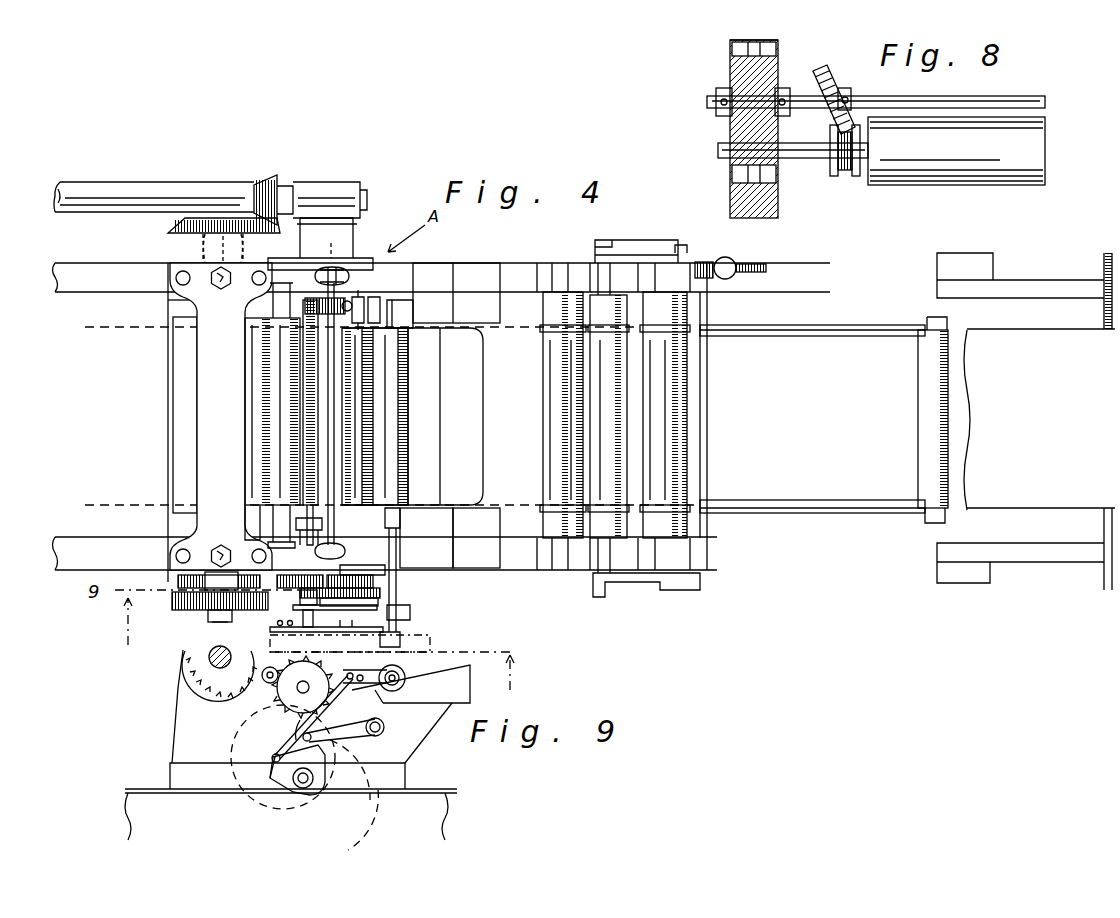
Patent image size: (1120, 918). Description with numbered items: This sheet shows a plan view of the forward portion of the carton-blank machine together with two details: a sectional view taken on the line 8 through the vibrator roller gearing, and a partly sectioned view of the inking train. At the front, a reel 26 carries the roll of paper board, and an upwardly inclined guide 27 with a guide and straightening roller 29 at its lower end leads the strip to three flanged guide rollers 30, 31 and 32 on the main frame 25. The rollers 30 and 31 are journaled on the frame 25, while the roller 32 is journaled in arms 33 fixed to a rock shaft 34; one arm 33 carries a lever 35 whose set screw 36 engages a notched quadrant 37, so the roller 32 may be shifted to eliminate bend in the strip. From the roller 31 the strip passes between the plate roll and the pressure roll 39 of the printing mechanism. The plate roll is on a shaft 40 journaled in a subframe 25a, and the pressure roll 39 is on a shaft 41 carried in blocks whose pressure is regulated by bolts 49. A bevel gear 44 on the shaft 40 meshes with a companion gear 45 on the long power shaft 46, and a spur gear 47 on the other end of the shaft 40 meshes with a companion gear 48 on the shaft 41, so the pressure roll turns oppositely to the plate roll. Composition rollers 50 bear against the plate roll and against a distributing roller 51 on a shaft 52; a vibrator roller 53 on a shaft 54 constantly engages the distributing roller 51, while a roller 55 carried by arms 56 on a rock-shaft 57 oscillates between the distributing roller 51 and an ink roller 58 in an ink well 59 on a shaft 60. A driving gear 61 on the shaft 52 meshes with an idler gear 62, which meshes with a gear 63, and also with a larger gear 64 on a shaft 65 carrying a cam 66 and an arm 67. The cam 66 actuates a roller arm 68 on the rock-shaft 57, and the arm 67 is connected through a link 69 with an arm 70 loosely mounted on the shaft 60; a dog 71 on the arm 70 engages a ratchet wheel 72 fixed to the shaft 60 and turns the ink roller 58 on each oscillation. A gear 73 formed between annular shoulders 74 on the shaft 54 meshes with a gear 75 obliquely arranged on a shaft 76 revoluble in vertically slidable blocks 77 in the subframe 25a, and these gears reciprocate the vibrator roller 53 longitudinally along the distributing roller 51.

In FIG. 4, the section line 8— 8 is at (340, 307).
In FIG. 4, the main frame 25 is at (498, 276).
In FIG. 4, the subframe 25a is at (186, 299).
In FIG. 9, the subframe 25a is at (190, 735).
In FIG. 8, the subframe 25a is at (740, 42).
In FIG. 4, the reel 26 is at (1105, 251).
In FIG. 4, the upwardly inclined guide 27 is at (808, 325).
In FIG. 4, the guide and straightening roller 29 is at (933, 370).
In FIG. 4, the flanged guide roller 30 is at (665, 448).
In FIG. 4, the flanged guide roller 31 is at (550, 442).
In FIG. 4, the flanged guide roller 32 is at (578, 362).
In FIG. 4, the arms 33 is at (638, 254).
In FIG. 4, the rock shaft 34 is at (690, 384).
In FIG. 4, the lever 35 is at (711, 263).
In FIG. 4, the set screw 36 is at (733, 276).
In FIG. 4, the notched quadrant 37 is at (766, 267).
In FIG. 4, the pressure roll 39 is at (185, 375).
In FIG. 4, the shaft 40 is at (220, 626).
In FIG. 4, the shaft 41 is at (210, 620).
In FIG. 4, the bevel gear 44 is at (176, 227).
In FIG. 4, the companion gear 45 is at (270, 178).
In FIG. 4, the power shaft 46 is at (136, 195).
In FIG. 4, the spur gear 47 is at (172, 600).
In FIG. 4, the companion gear 48 is at (180, 589).
In FIG. 4, the bolts 49 is at (222, 555).
In FIG. 4, the composition rollers 50 is at (280, 417).
In FIG. 4, the distributing roller 51 is at (308, 481).
In FIG. 4, the shaft 52 is at (300, 528).
In FIG. 9, the shaft 52 is at (303, 687).
In FIG. 4, the vibrator roller 53 is at (338, 455).
In FIG. 8, the vibrator roller 53 is at (960, 150).
In FIG. 8, the shaft 54 is at (810, 158).
In FIG. 4, the roller 55 is at (358, 435).
In FIG. 4, the arms 56 is at (376, 302).
In FIG. 4, the rock-shaft 57 is at (376, 585).
In FIG. 9, the rock-shaft 57 is at (376, 730).
In FIG. 4, the ink roller 58 is at (385, 405).
In FIG. 4, the ink well 59 is at (483, 480).
In FIG. 4, the shaft 60 is at (398, 558).
In FIG. 4, the driving gear 61 is at (325, 546).
In FIG. 9, the driving gear 61 is at (308, 670).
In FIG. 9, the idler gear 62 is at (267, 682).
In FIG. 4, the gear 63 is at (172, 571).
In FIG. 9, the gear 63 is at (202, 675).
In FIG. 4, the larger gear 64 is at (357, 572).
In FIG. 9, the larger gear 64 is at (302, 725).
In FIG. 4, the shaft 65 is at (297, 609).
In FIG. 9, the shaft 65 is at (302, 801).
In FIG. 4, the cam 66 is at (378, 602).
In FIG. 9, the cam 66 is at (327, 793).
In FIG. 4, the arm 67 is at (326, 627).
In FIG. 9, the arm 67 is at (287, 780).
In FIG. 4, the roller arm 68 is at (319, 608).
In FIG. 9, the roller arm 68 is at (348, 740).
In FIG. 4, the link 69 is at (341, 635).
In FIG. 9, the link 69 is at (233, 767).
In FIG. 9, the arm 70 is at (370, 689).
In FIG. 4, the dog 71 is at (383, 643).
In FIG. 4, the ratchet wheel 72 is at (402, 624).
In FIG. 9, the ratchet wheel 72 is at (410, 678).
In FIG. 8, the gear 73 is at (843, 176).
In FIG. 8, the annular shoulders 74 is at (856, 176).
In FIG. 4, the gear 75 is at (380, 298).
In FIG. 8, the gear 75 is at (832, 70).
In FIG. 4, the shaft 76 is at (310, 286).
In FIG. 8, the shaft 76 is at (946, 102).
In FIG. 4, the vertically slidable blocks 77 is at (352, 268).
In FIG. 8, the vertically slidable blocks 77 is at (730, 72).